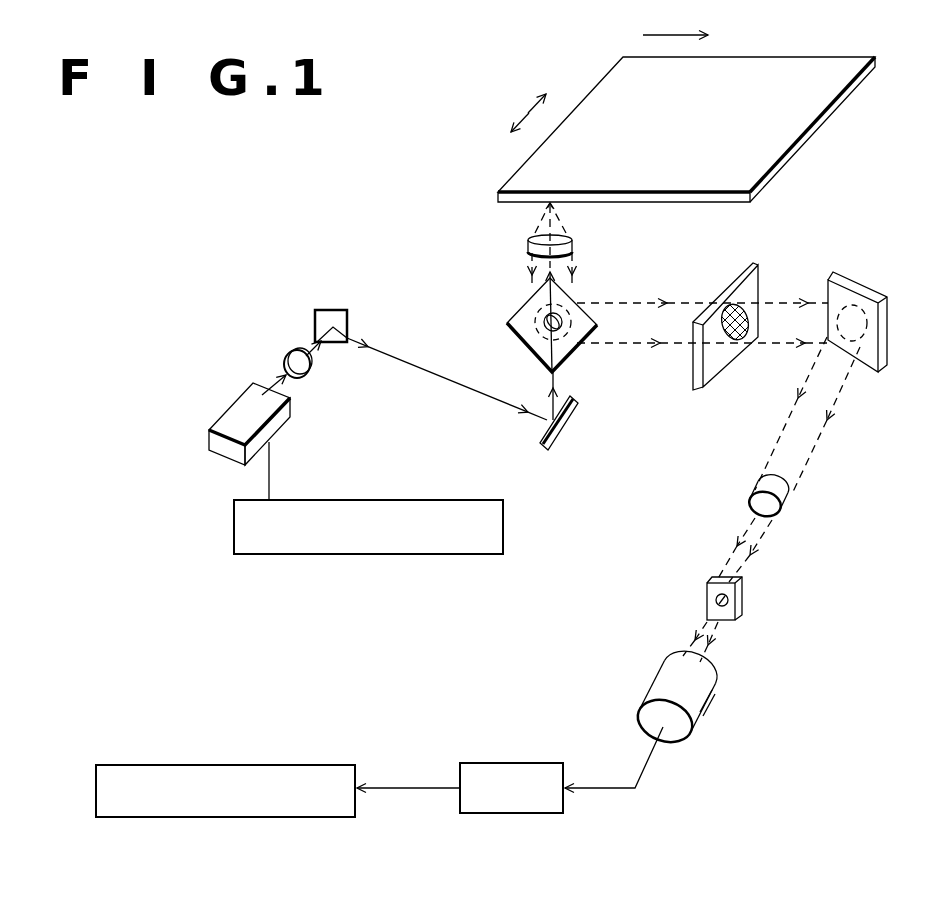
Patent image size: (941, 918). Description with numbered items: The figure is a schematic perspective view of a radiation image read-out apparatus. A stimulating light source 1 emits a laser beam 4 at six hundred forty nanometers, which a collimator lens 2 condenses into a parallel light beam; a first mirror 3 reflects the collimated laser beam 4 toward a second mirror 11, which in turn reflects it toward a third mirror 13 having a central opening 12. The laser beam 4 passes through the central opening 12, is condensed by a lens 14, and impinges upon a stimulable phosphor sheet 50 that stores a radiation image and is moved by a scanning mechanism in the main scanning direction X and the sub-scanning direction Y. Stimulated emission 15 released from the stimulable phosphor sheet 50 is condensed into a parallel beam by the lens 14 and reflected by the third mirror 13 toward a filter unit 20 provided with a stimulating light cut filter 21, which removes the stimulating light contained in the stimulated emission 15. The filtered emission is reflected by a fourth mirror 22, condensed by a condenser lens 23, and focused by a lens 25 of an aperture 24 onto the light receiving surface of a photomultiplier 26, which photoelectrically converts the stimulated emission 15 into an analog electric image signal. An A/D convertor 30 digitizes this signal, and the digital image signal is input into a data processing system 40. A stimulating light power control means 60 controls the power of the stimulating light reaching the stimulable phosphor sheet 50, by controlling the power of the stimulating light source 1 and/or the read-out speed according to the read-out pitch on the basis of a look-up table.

The stimulating light source 1 is at (227, 415).
The collimator lens 2 is at (287, 350).
The first mirror 3 is at (327, 314).
The laser beam 4 is at (358, 333).
The second mirror 11 is at (568, 420).
The central opening 12 is at (543, 329).
The third mirror 13 is at (571, 353).
The lens 14 is at (528, 241).
The stimulated emission 15 is at (575, 288).
The filter unit 20 is at (760, 281).
The stimulating light cut filter 21 is at (746, 345).
The fourth mirror 22 is at (892, 300).
The condenser lens 23 is at (790, 508).
The aperture 24 is at (706, 584).
The lens 25 is at (716, 602).
The photomultiplier 26 is at (645, 661).
The A/D convertor 30 is at (531, 763).
The data processing system 40 is at (273, 765).
The stimulable phosphor sheet 50 is at (866, 58).
The stimulating light power control means 60 is at (487, 554).